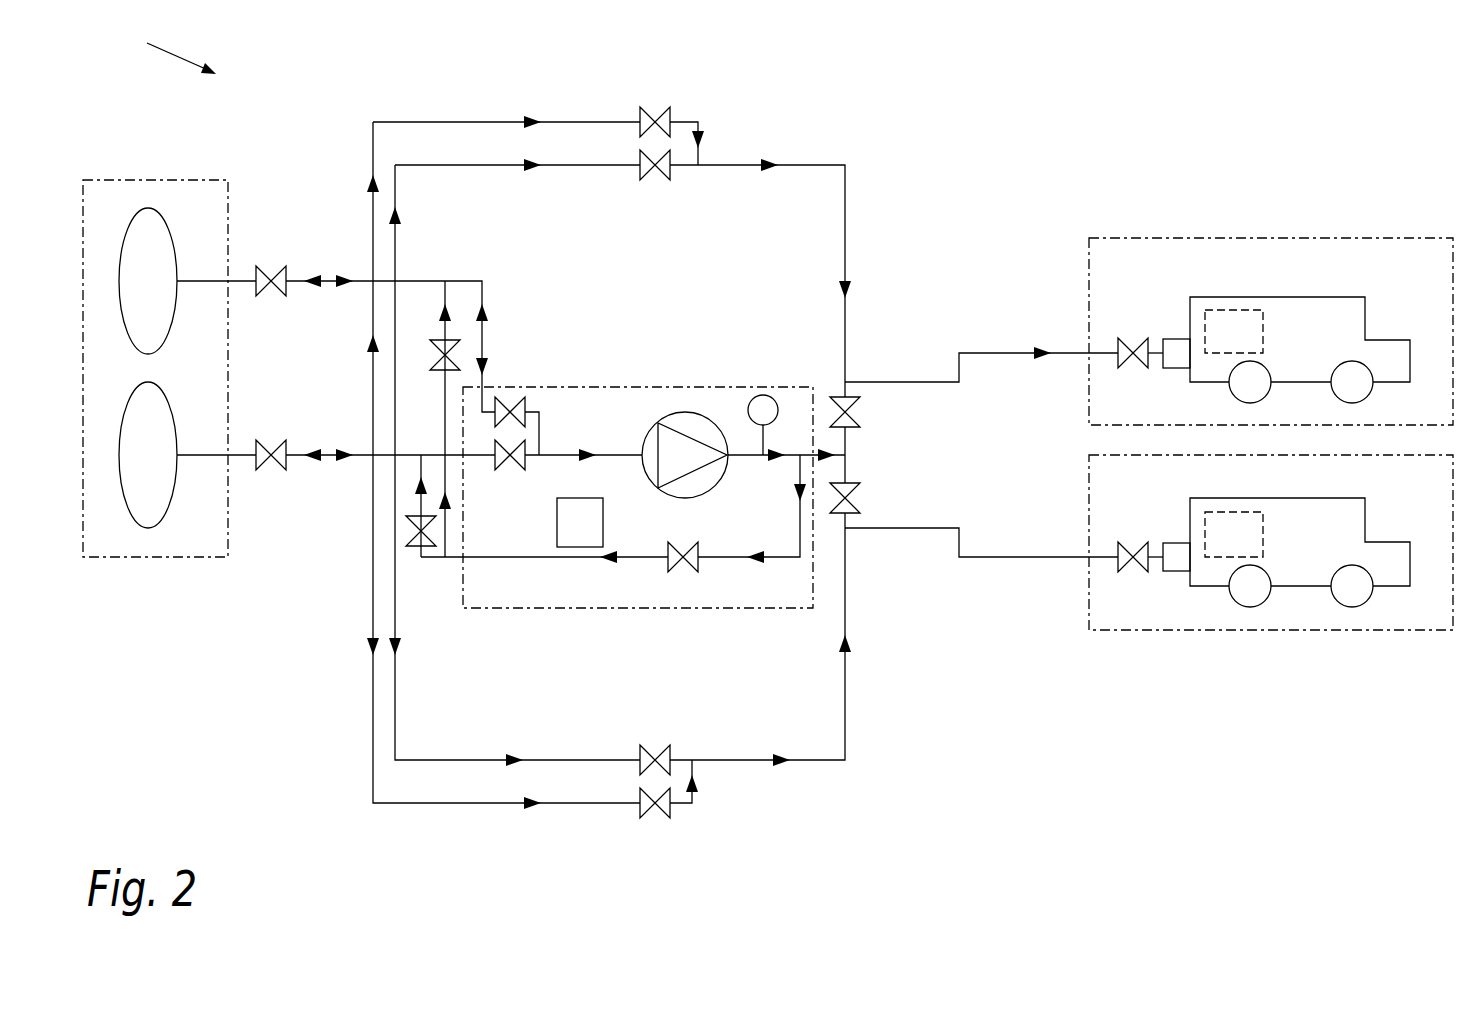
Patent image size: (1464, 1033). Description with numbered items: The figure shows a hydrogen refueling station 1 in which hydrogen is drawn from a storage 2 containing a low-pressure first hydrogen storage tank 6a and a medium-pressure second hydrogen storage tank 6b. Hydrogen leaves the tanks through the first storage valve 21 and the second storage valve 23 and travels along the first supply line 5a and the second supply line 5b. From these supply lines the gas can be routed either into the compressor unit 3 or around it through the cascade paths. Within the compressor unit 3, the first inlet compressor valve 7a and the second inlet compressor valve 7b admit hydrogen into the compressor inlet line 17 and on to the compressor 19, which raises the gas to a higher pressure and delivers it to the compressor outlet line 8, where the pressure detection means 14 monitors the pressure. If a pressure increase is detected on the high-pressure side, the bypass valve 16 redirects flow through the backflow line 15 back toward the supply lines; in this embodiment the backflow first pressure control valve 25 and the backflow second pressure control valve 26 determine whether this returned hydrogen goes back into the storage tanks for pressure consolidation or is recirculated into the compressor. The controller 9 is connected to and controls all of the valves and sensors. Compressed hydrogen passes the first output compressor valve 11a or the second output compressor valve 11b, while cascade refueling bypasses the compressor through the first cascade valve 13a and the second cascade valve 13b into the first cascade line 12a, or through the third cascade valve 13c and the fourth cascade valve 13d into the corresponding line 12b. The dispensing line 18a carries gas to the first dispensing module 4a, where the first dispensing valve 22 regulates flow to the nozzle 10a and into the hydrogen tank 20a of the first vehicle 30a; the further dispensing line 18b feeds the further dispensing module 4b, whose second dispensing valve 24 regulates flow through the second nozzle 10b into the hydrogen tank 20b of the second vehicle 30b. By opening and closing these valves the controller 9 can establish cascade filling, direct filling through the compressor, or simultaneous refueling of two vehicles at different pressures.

The hydrogen refueling station 1 is at (168, 49).
The storage 2 is at (160, 180).
The low-pressure storage tank 6a is at (163, 297).
The medium-pressure storage tank 6b is at (163, 478).
The low-pressure storage valve 21 is at (277, 268).
The medium-pressure storage valve 23 is at (277, 442).
The low-pressure supply line 5a is at (431, 282).
The medium-pressure supply line 5b is at (318, 460).
The backflow first pressure control valve 25 is at (448, 356).
The backflow second pressure control valve 26 is at (421, 548).
The first inlet compressor valve 7a is at (518, 397).
The second inlet compressor valve 7b is at (512, 447).
The compressor unit 3 is at (535, 608).
The compressor inlet line 17 is at (620, 455).
The compressor 19 is at (685, 412).
The compressor outlet line 8 is at (742, 458).
The pressure detection means 14 is at (762, 396).
The backflow line 15 is at (772, 558).
The bypass valve 16 is at (677, 572).
The controller 9 is at (582, 545).
The first output compressor valve 11a is at (838, 397).
The second output compressor valve 11b is at (828, 512).
The first cascade line 12a is at (815, 165).
The second return line 12b is at (845, 745).
The first cascade valve 13a is at (655, 107).
The second cascade valve 13b is at (652, 163).
The third cascade valve 13c is at (653, 817).
The fourth cascade valve 13d is at (672, 800).
The dispensing line 18a is at (1003, 352).
The further dispensing line 18b is at (1013, 557).
The first dispensing valve 22 is at (1137, 340).
The second dispensing valve 24 is at (1133, 563).
The first dispenser nozzle 10a is at (1178, 340).
The second nozzle 10b is at (1178, 567).
The hydrogen tank 20a is at (1243, 330).
The hydrogen tank 20b is at (1227, 547).
The first vehicle 30a is at (1357, 348).
The second vehicle 30b is at (1350, 542).
The first dispensing module 4a is at (1222, 238).
The further dispensing module 4b is at (1345, 630).